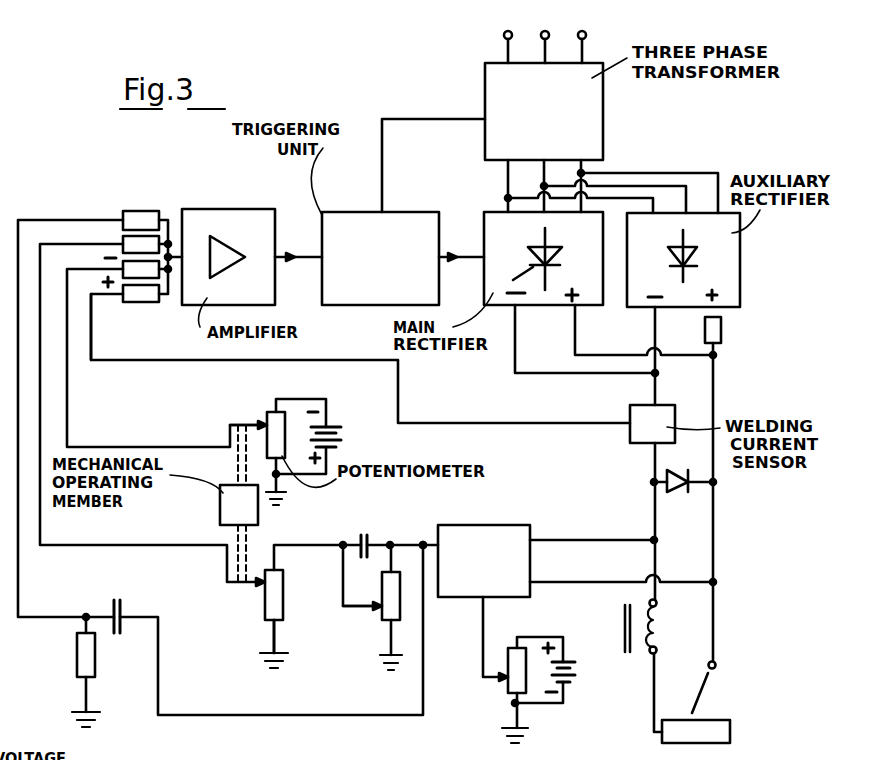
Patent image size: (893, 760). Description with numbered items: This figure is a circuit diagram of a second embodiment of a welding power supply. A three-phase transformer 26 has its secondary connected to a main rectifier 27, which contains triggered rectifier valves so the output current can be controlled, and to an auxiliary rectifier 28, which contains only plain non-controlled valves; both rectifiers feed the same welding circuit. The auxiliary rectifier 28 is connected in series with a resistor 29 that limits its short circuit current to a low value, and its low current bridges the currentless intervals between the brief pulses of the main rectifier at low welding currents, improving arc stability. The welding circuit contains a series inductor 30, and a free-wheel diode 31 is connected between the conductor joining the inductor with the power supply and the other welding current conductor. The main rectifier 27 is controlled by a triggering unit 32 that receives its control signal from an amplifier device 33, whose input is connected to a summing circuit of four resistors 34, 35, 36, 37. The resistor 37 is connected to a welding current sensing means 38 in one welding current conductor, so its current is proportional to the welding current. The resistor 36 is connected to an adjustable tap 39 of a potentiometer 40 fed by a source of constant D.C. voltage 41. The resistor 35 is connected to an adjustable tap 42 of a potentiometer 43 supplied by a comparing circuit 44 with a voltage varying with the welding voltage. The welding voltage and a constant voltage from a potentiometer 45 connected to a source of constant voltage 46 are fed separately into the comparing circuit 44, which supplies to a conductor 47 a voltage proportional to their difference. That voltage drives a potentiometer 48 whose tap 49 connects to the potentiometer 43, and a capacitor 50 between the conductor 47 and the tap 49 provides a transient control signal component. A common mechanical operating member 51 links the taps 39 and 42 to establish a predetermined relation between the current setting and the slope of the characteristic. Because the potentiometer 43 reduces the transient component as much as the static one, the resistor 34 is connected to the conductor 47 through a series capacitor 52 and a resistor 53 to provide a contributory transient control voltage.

The three-phase transformer 26 is at (597, 110).
The main rectifier 27 is at (488, 210).
The auxiliary rectifier 28 is at (702, 225).
The resistor 29 is at (717, 333).
The series inductor 30 is at (623, 617).
The free-wheel diode 31 is at (667, 483).
The triggering unit 32 is at (347, 212).
The amplifier device 33 is at (240, 209).
The resistor 34 is at (148, 221).
The resistor 35 is at (133, 243).
The resistor 36 is at (138, 270).
The resistor 37 is at (144, 295).
The welding current sensing means 38 is at (642, 435).
The adjustable tap 39 is at (258, 424).
The potentiometer 40 is at (278, 418).
The source of constant D.C. voltage 41 is at (340, 438).
The adjustable tap 42 is at (262, 585).
The potentiometer 43 is at (265, 610).
The comparing circuit 44 is at (487, 528).
The potentiometer 45 is at (510, 680).
The source of constant voltage 46 is at (577, 672).
The conductor 47 is at (409, 543).
The potentiometer 48 is at (387, 620).
The tap 49 is at (373, 610).
The capacitor 50 is at (358, 533).
The mechanical operating member 51 is at (216, 500).
The series capacitor 52 is at (118, 598).
The resistor 53 is at (75, 650).